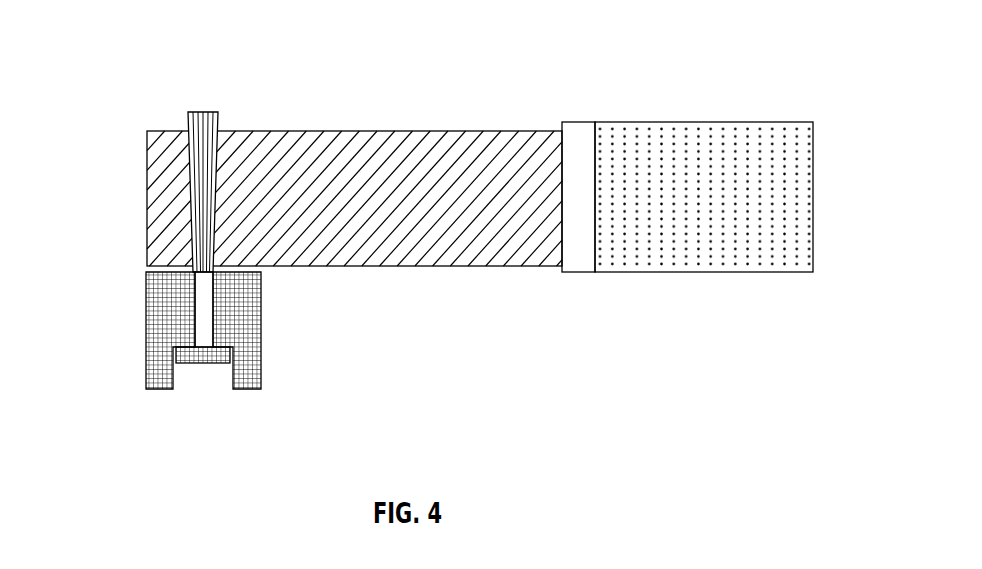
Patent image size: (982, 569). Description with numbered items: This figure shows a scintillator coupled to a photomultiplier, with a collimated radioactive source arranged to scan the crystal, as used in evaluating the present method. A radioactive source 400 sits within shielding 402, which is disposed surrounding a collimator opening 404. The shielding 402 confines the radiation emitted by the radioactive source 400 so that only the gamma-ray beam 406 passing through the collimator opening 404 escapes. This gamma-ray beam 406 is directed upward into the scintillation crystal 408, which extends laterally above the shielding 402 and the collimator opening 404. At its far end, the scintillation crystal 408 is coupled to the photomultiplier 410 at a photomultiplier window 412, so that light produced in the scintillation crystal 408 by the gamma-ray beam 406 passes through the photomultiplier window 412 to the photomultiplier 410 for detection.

The radioactive source 400 is at (208, 363).
The shielding 402 is at (261, 313).
The collimator opening 404 is at (205, 325).
The gamma-ray beam 406 is at (204, 112).
The scintillation crystal 408 is at (390, 142).
The photomultiplier 410 is at (762, 140).
The photomultiplier window 412 is at (578, 122).